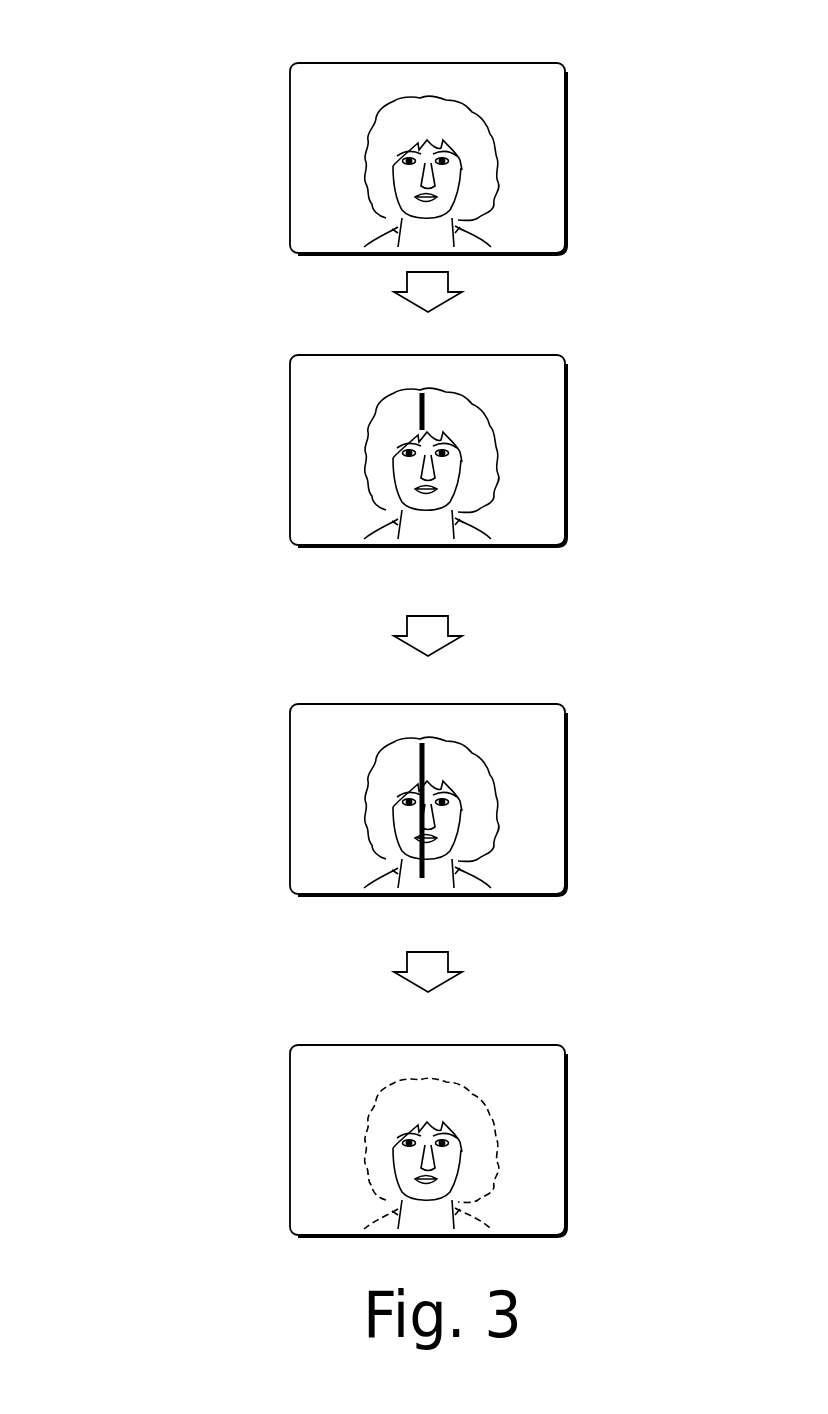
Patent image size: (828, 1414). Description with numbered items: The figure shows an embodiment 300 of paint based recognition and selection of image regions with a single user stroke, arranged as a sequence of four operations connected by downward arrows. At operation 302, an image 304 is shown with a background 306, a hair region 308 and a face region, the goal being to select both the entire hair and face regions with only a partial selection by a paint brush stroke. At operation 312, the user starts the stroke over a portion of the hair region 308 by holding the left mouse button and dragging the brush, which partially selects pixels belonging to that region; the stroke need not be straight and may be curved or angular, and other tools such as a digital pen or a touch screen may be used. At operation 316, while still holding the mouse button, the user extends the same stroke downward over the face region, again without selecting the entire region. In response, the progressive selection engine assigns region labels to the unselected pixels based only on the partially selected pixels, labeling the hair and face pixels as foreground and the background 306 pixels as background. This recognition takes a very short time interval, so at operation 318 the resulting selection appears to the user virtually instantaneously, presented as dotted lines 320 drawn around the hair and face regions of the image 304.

The embodiment 300 is at (183, 57).
The operation 302 is at (198, 163).
The image 304 is at (567, 61).
The background 306 is at (536, 124).
The hair region 308 is at (383, 124).
The operation 312 is at (198, 443).
The operation 316 is at (198, 808).
The operation 318 is at (198, 1143).
The dotted lines 320 is at (462, 1099).